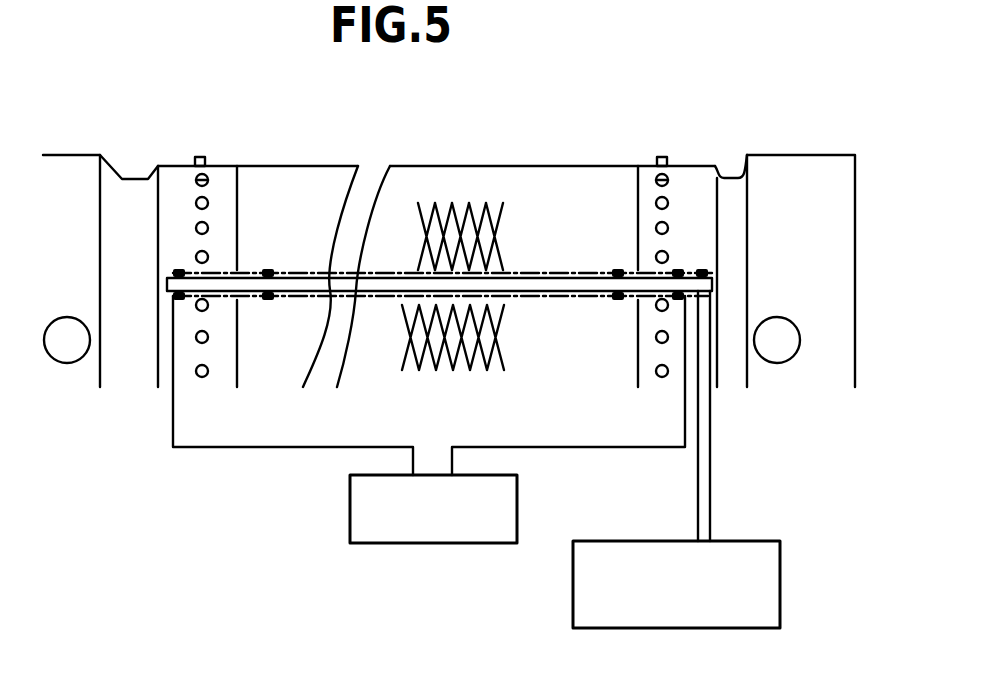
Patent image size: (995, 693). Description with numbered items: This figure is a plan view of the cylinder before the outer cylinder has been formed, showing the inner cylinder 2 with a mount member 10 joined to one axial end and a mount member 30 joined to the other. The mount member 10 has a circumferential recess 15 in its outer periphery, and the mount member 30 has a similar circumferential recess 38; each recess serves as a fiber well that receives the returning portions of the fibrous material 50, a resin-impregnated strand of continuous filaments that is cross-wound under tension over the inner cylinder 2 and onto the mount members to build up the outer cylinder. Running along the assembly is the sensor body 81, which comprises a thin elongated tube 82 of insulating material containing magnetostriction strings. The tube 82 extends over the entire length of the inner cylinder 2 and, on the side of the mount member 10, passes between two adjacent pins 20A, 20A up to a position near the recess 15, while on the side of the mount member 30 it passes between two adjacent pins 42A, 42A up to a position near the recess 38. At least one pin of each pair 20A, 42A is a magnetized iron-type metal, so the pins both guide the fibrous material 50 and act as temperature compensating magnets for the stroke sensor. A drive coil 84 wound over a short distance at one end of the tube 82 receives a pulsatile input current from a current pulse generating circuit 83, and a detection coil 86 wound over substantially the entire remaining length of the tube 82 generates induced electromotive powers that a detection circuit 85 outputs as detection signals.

The inner cylinder 2 is at (573, 183).
The mount member 10 is at (184, 180).
The circumferential recess 15 is at (137, 179).
The pins 20A is at (208, 255).
The mount member 30 is at (823, 183).
The circumferential recess 38 is at (735, 178).
The pins 42A is at (668, 256).
The fibrous material 50 is at (425, 203).
The sensor body 81 is at (518, 268).
The thin elongated tube 82 is at (573, 278).
The current pulse generating circuit 83 is at (780, 598).
The drive coil 84 is at (712, 268).
The detection circuit 85 is at (423, 545).
The detection coil 86 is at (550, 297).